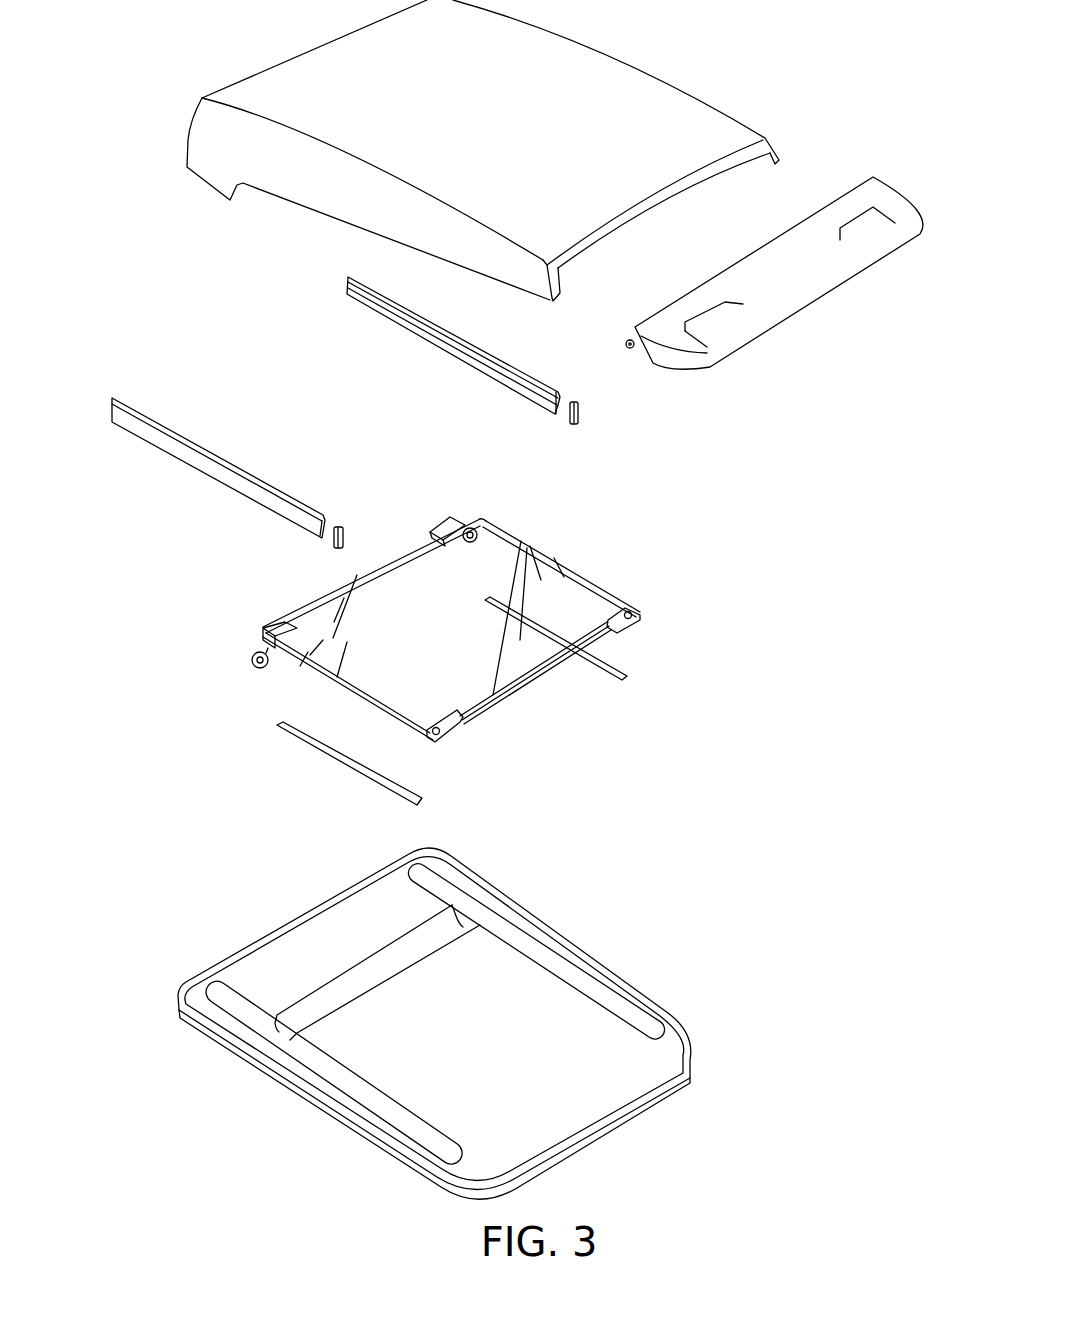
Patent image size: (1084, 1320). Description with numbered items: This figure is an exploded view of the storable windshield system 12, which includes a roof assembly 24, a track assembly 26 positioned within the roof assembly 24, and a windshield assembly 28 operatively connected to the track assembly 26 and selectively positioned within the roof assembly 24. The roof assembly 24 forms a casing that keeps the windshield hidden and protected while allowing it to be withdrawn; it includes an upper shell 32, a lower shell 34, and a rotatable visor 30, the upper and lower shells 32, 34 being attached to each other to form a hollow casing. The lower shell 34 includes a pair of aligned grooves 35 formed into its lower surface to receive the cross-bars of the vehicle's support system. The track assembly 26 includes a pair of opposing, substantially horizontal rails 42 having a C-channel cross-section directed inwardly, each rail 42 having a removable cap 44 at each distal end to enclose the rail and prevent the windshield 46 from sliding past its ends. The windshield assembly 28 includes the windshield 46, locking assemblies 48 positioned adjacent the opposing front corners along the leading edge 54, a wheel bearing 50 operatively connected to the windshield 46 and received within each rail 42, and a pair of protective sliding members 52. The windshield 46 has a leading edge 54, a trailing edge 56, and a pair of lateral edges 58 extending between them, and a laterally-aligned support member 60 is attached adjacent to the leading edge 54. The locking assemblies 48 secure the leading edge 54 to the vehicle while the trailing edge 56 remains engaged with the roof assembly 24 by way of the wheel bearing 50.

The storable windshield system 12 is at (121, 86).
The roof assembly 24 is at (827, 145).
The track assembly 26 is at (158, 515).
The windshield assembly 28 is at (449, 636).
The rotatable visor 30 is at (800, 270).
The upper shell 32 is at (279, 168).
The lower shell 34 is at (434, 1023).
The grooves 35 is at (533, 953).
The rails 42 is at (505, 362).
The cap 44 is at (582, 413).
The windshield 46 is at (490, 556).
The locking assembly 48 is at (638, 638).
The wheel bearing 50 is at (262, 638).
The protective sliding members 52 is at (600, 668).
The leading edge 54 is at (488, 703).
The trailing edge 56 is at (317, 598).
The lateral edges 58 is at (355, 692).
The support member 60 is at (537, 677).